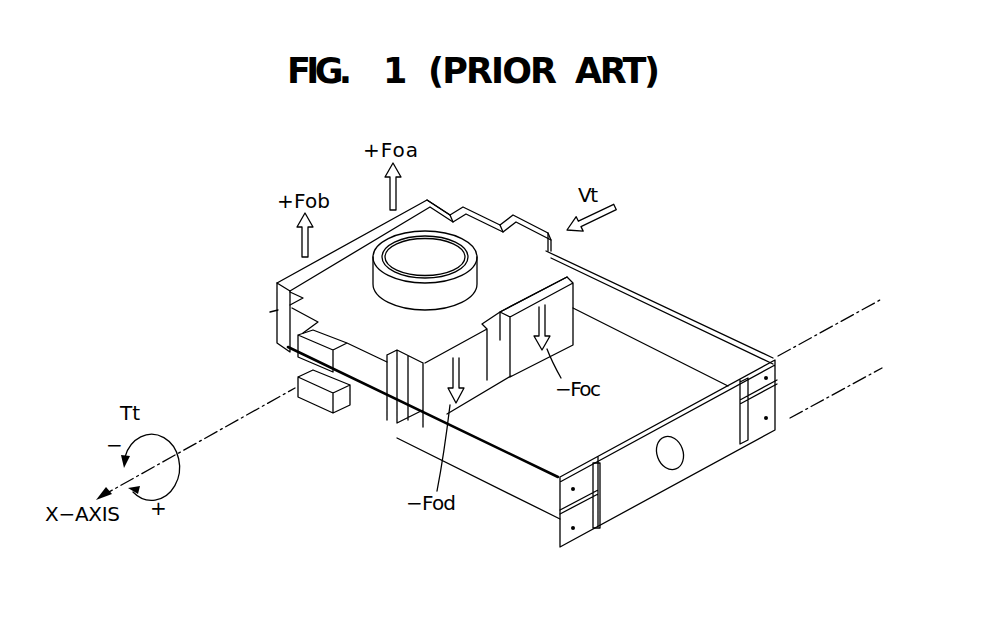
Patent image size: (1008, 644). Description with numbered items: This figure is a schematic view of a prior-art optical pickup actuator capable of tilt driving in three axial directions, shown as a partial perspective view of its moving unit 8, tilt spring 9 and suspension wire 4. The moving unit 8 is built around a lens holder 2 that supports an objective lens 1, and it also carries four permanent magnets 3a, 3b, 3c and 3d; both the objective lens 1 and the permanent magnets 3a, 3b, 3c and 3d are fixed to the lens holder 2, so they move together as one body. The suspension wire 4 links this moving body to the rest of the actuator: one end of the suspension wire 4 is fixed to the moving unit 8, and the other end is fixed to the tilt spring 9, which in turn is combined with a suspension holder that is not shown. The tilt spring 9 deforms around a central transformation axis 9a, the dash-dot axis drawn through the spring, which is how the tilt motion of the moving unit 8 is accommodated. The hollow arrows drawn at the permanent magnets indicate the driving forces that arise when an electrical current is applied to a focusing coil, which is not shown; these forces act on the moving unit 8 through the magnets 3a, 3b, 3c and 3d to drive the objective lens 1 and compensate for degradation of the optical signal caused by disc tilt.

The objective lens 1 is at (455, 250).
The lens holder 2 is at (362, 330).
The permanent magnet 3a is at (428, 203).
The permanent magnet 3b is at (270, 313).
The permanent magnet 3c is at (568, 302).
The permanent magnet 3d is at (418, 411).
The suspension wire 4 is at (672, 322).
The moving unit 8 is at (259, 237).
The tilt spring 9 is at (655, 490).
The central transformation axis 9a is at (840, 322).